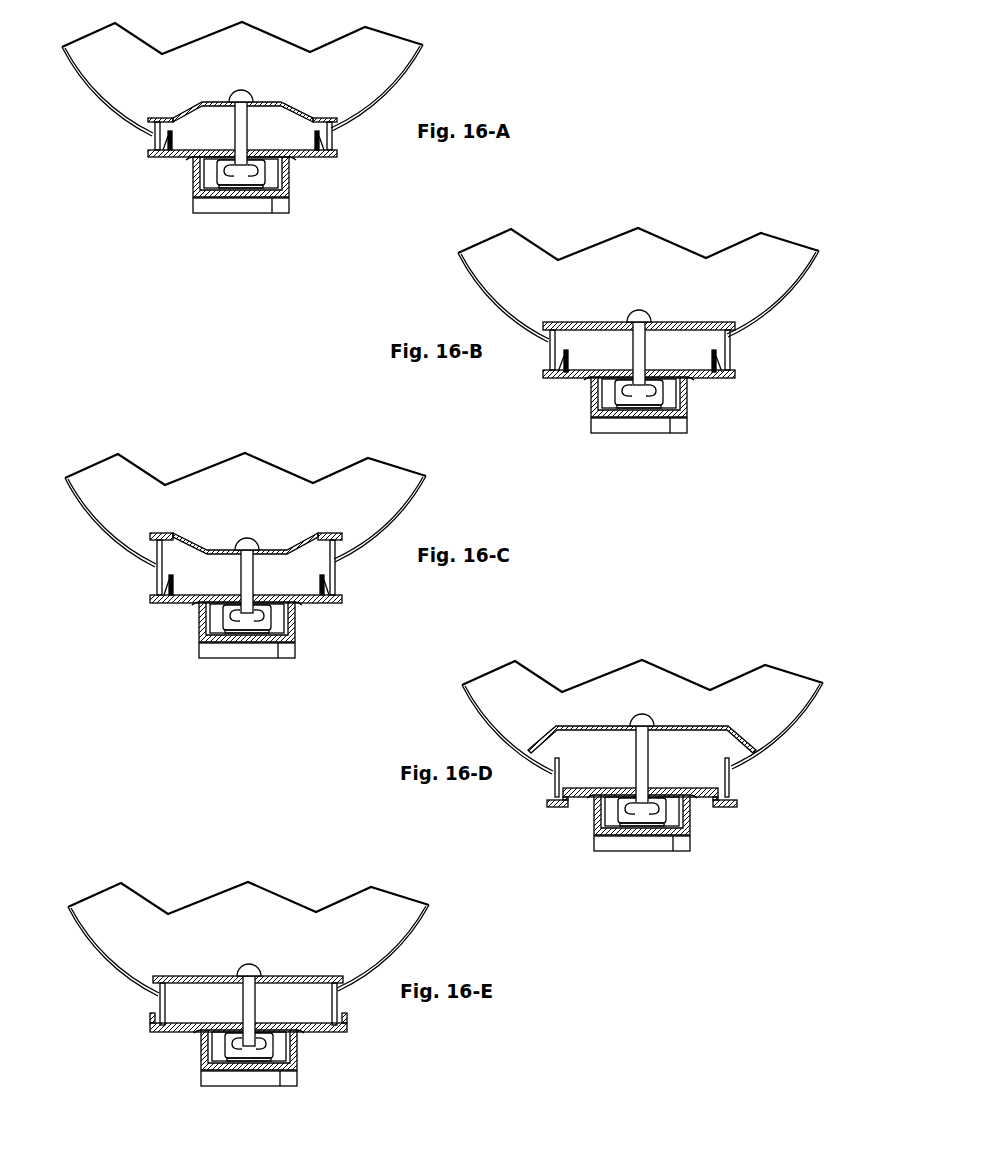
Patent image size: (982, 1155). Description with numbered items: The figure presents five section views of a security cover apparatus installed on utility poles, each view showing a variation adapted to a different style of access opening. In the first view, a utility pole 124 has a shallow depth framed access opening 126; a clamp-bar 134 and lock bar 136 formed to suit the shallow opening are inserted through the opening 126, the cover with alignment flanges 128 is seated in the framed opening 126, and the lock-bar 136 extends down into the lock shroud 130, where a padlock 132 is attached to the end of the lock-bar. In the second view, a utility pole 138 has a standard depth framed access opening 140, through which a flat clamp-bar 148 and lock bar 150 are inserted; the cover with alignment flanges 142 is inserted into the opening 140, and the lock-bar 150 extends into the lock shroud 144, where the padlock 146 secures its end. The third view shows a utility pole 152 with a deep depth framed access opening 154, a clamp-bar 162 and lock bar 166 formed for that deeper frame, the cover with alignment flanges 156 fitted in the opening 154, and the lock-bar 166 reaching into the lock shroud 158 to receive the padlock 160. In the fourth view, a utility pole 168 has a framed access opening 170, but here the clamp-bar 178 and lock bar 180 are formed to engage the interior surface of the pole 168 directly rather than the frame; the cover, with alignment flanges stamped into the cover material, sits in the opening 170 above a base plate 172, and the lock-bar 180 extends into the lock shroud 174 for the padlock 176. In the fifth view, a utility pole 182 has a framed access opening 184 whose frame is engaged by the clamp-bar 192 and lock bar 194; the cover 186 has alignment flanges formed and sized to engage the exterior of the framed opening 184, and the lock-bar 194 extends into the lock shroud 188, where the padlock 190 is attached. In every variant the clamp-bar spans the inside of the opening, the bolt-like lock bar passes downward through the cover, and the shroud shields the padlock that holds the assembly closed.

In FIG. 16-A, the utility pole 124 is at (103, 107).
In FIG. 16-A, the shallow depth framed access opening 126 is at (150, 142).
In FIG. 16-A, the cover with alignment flanges 128 is at (310, 160).
In FIG. 16-A, the lock shroud 130 is at (193, 202).
In FIG. 16-A, the padlock 132 is at (273, 213).
In FIG. 16-A, the clamp-bar 134 is at (190, 108).
In FIG. 16-A, the lock bar 136 is at (253, 127).
In FIG. 16-B, the utility pole 138 is at (777, 313).
In FIG. 16-B, the standard depth framed access opening 140 is at (730, 348).
In FIG. 16-B, the cover with alignment flanges 142 is at (573, 378).
In FIG. 16-B, the lock shroud 144 is at (690, 402).
In FIG. 16-B, the padlock 146 is at (610, 405).
In FIG. 16-B, the flat clamp-bar 148 is at (670, 322).
In FIG. 16-B, the lock bar 150 is at (628, 355).
In FIG. 16-C, the utility pole 152 is at (107, 538).
In FIG. 16-C, the deep depth framed access opening 154 is at (157, 572).
In FIG. 16-C, the cover with alignment flanges 156 is at (315, 603).
In FIG. 16-C, the lock shroud 158 is at (197, 630).
In FIG. 16-C, the padlock 160 is at (278, 653).
In FIG. 16-C, the clamp-bar 162 is at (190, 540).
In FIG. 16-C, the lock bar 166 is at (257, 570).
In FIG. 16-D, the utility pole 168 is at (782, 740).
In FIG. 16-D, the framed access opening 170 is at (732, 778).
In FIG. 16-D, the base plate 172 is at (577, 797).
In FIG. 16-D, the lock shroud 174 is at (690, 825).
In FIG. 16-D, the padlock 176 is at (613, 813).
In FIG. 16-D, the clamp-bar 178 is at (678, 720).
In FIG. 16-D, the lock bar 180 is at (632, 763).
In FIG. 16-E, the utility pole 182 is at (110, 967).
In FIG. 16-E, the framed access opening 184 is at (157, 1002).
In FIG. 16-E, the cover 186 is at (318, 1032).
In FIG. 16-E, the lock shroud 188 is at (200, 1060).
In FIG. 16-E, the padlock 190 is at (282, 1083).
In FIG. 16-E, the clamp-bar 192 is at (203, 977).
In FIG. 16-E, the lock bar 194 is at (257, 1007).